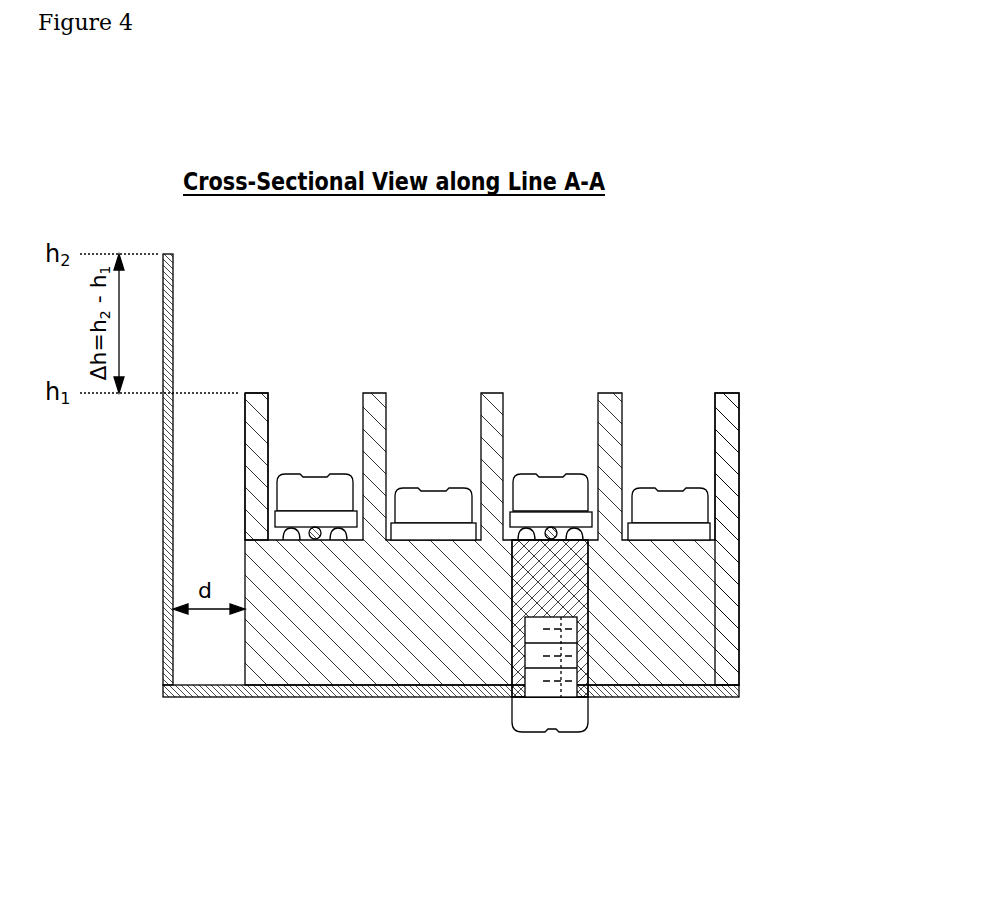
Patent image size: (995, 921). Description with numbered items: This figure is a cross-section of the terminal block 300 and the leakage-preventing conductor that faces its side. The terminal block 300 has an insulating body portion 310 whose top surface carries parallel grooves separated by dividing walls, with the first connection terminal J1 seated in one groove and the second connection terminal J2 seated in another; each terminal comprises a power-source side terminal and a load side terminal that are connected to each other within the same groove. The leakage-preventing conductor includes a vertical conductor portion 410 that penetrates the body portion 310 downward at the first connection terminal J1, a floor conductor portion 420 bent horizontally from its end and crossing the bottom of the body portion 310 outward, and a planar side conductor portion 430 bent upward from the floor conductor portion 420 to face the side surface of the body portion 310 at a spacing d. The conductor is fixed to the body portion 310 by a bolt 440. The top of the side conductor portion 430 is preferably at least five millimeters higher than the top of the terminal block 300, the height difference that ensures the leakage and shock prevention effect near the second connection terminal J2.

The terminal block 300 is at (770, 505).
The body portion 310 is at (739, 578).
The vertical conductor portion 410 is at (530, 592).
The floor conductor portion 420 is at (293, 697).
The side conductor portion 430 is at (163, 449).
The bolt 440 is at (577, 718).
The first connection terminal J1 is at (551, 490).
The second connection terminal J2 is at (313, 490).